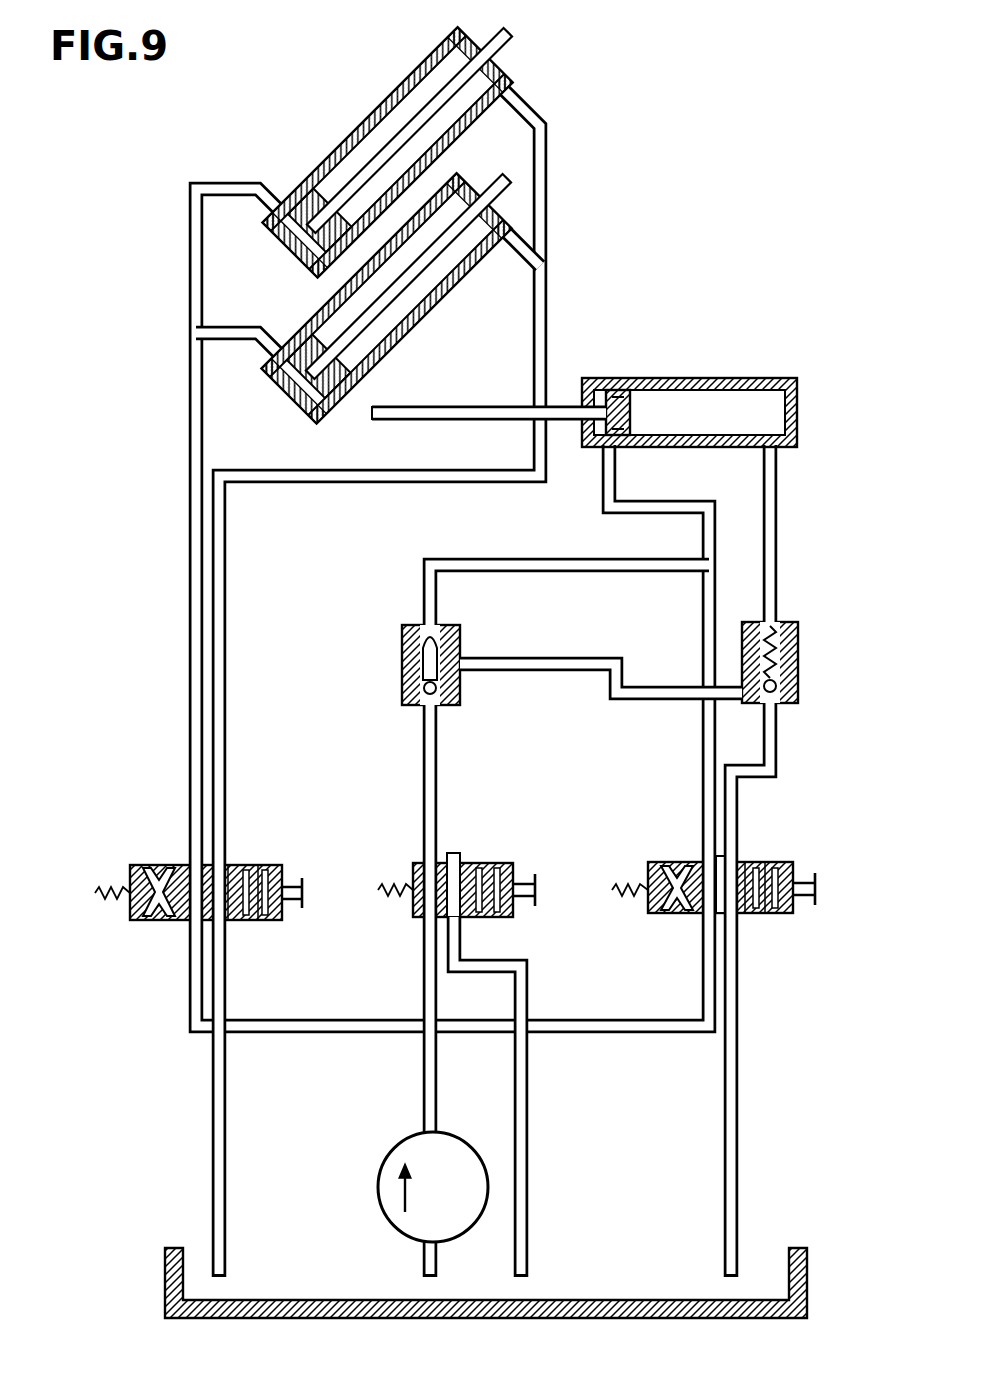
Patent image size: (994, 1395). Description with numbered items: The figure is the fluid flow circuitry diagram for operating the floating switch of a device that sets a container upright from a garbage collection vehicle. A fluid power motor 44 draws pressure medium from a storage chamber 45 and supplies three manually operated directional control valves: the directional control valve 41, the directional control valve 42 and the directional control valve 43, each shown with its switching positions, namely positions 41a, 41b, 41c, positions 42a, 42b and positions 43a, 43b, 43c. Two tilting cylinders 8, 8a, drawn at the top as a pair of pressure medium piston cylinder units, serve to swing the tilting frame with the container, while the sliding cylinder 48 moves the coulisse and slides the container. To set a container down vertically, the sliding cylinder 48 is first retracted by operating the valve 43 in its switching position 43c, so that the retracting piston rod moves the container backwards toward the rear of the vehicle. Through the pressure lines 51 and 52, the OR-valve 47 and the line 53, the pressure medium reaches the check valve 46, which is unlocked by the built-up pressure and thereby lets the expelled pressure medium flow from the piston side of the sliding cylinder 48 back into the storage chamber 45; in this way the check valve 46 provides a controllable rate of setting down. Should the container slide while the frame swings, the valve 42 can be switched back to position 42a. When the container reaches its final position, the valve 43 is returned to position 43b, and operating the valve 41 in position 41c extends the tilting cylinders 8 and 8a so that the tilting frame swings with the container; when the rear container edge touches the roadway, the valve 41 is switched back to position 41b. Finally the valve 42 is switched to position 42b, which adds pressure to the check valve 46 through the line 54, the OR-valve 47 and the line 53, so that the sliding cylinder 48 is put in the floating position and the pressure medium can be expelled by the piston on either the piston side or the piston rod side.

The tilting cylinder 8 is at (413, 73).
The tilting cylinder 8a is at (455, 177).
The directional control valve 41 is at (208, 897).
The switching position of valve 41 41a is at (155, 920).
The switching position of valve 41 41b is at (240, 920).
The switching position of valve 41 41c is at (268, 865).
The directional control valve 42 is at (468, 890).
The switching position of valve 42 42a is at (414, 919).
The switching position of valve 42 42b is at (506, 917).
The directional control valve 43 is at (713, 889).
The switching position of valve 43 43a is at (672, 913).
The switching position of valve 43 43b is at (743, 913).
The switching position of valve 43 43c is at (756, 862).
The fluid power motor 44 is at (384, 1161).
The storage chamber 45 is at (302, 1263).
The check valve 46 is at (739, 623).
The OR-valve 47 is at (412, 625).
The sliding cylinder 48 is at (642, 378).
The pressure line 51 is at (702, 640).
The pressure line 52 is at (555, 558).
The line 53 is at (552, 658).
The line 54 is at (422, 799).